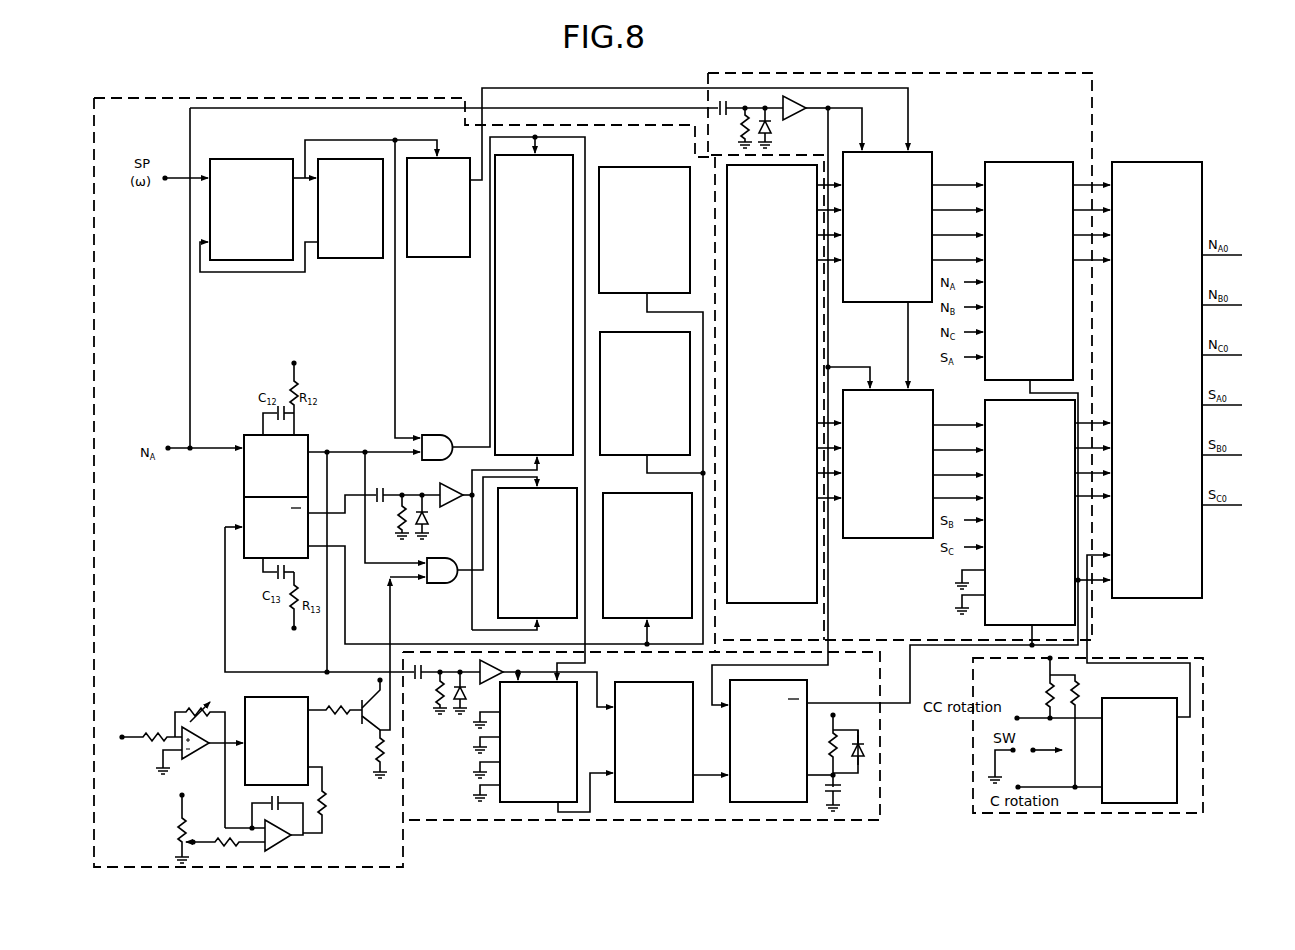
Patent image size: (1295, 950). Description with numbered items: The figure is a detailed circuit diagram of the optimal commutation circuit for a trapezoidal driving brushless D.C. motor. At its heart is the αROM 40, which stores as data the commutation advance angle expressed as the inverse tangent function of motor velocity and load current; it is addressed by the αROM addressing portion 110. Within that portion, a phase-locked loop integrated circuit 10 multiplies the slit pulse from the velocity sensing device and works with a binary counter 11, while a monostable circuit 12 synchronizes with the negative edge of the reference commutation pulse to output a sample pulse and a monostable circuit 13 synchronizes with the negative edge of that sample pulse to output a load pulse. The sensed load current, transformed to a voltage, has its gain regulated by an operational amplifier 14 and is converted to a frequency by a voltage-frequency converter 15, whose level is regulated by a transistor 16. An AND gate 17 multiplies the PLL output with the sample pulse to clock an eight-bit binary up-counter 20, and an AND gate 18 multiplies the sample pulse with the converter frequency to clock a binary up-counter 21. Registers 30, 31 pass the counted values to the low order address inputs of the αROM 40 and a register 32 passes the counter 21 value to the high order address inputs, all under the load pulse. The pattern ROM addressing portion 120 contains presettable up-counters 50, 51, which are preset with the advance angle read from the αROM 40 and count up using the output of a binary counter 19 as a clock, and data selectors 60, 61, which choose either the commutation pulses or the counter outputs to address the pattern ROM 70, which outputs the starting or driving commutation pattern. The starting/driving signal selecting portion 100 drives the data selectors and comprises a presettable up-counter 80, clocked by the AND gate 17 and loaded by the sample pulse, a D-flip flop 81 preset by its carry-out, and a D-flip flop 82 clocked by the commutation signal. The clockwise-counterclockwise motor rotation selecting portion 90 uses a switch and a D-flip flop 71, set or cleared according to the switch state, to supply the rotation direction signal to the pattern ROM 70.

The phase-locked loop integrated circuit 10 is at (251, 209).
The binary counter 11 is at (350, 208).
The monostable circuit 12 is at (276, 466).
The monostable circuit 13 is at (276, 527).
The operational amplifier 14 is at (175, 765).
The voltage-frequency converter 15 is at (276, 741).
The transistor 16 is at (366, 677).
The AND gate 17 is at (437, 447).
The AND gate 18 is at (442, 570).
The binary counter 19 is at (438, 207).
The 8-bit binary up-counter 20 is at (534, 305).
The binary up-counter 21 is at (537, 553).
The register 30 is at (644, 230).
The register 31 is at (645, 393).
The register 32 is at (647, 555).
The αROM 40 is at (772, 384).
The presettable up-counter 50 is at (887, 227).
The presettable up-counter 51 is at (888, 464).
The data selector 60 is at (1029, 271).
The data selector 61 is at (1030, 512).
The pattern ROM 70 is at (1157, 162).
The D-flip flop 71 is at (1139, 750).
The presettable up-counter 80 is at (538, 742).
The D-flip flop 81 is at (654, 742).
The D-flip flop 82 is at (768, 741).
The clockwise-counterclockwise motor rotation selecting portion 90 is at (973, 740).
The starting/driving signal selecting portion 100 is at (642, 820).
The αROM addressing portion 110 is at (305, 98).
The pattern ROM addressing portion 120 is at (1092, 97).